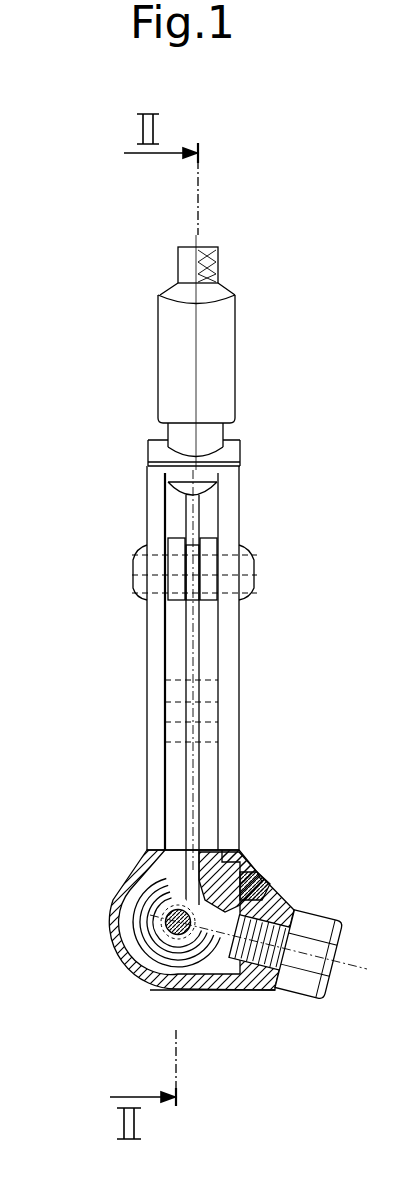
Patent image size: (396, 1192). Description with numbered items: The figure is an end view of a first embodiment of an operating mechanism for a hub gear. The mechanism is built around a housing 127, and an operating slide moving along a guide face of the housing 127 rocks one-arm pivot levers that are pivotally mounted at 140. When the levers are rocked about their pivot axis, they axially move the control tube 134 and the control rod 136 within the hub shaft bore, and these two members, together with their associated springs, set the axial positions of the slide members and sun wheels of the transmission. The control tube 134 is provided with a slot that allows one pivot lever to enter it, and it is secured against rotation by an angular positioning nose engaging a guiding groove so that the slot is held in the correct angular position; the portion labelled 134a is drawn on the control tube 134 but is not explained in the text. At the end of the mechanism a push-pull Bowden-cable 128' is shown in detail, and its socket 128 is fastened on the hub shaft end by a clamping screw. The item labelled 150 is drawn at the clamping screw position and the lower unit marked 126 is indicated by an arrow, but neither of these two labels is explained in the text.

The push-pull Bowden-cable 128' is at (254, 251).
The pivot mounting 140 is at (138, 588).
The housing 127 is at (148, 707).
The control tube 134 is at (180, 862).
The clamping element portion 134a is at (250, 880).
The socket 128 is at (165, 920).
The control rod 136 is at (168, 930).
The pivot joint 126 is at (200, 996).
The clamping screw 150 is at (322, 1005).